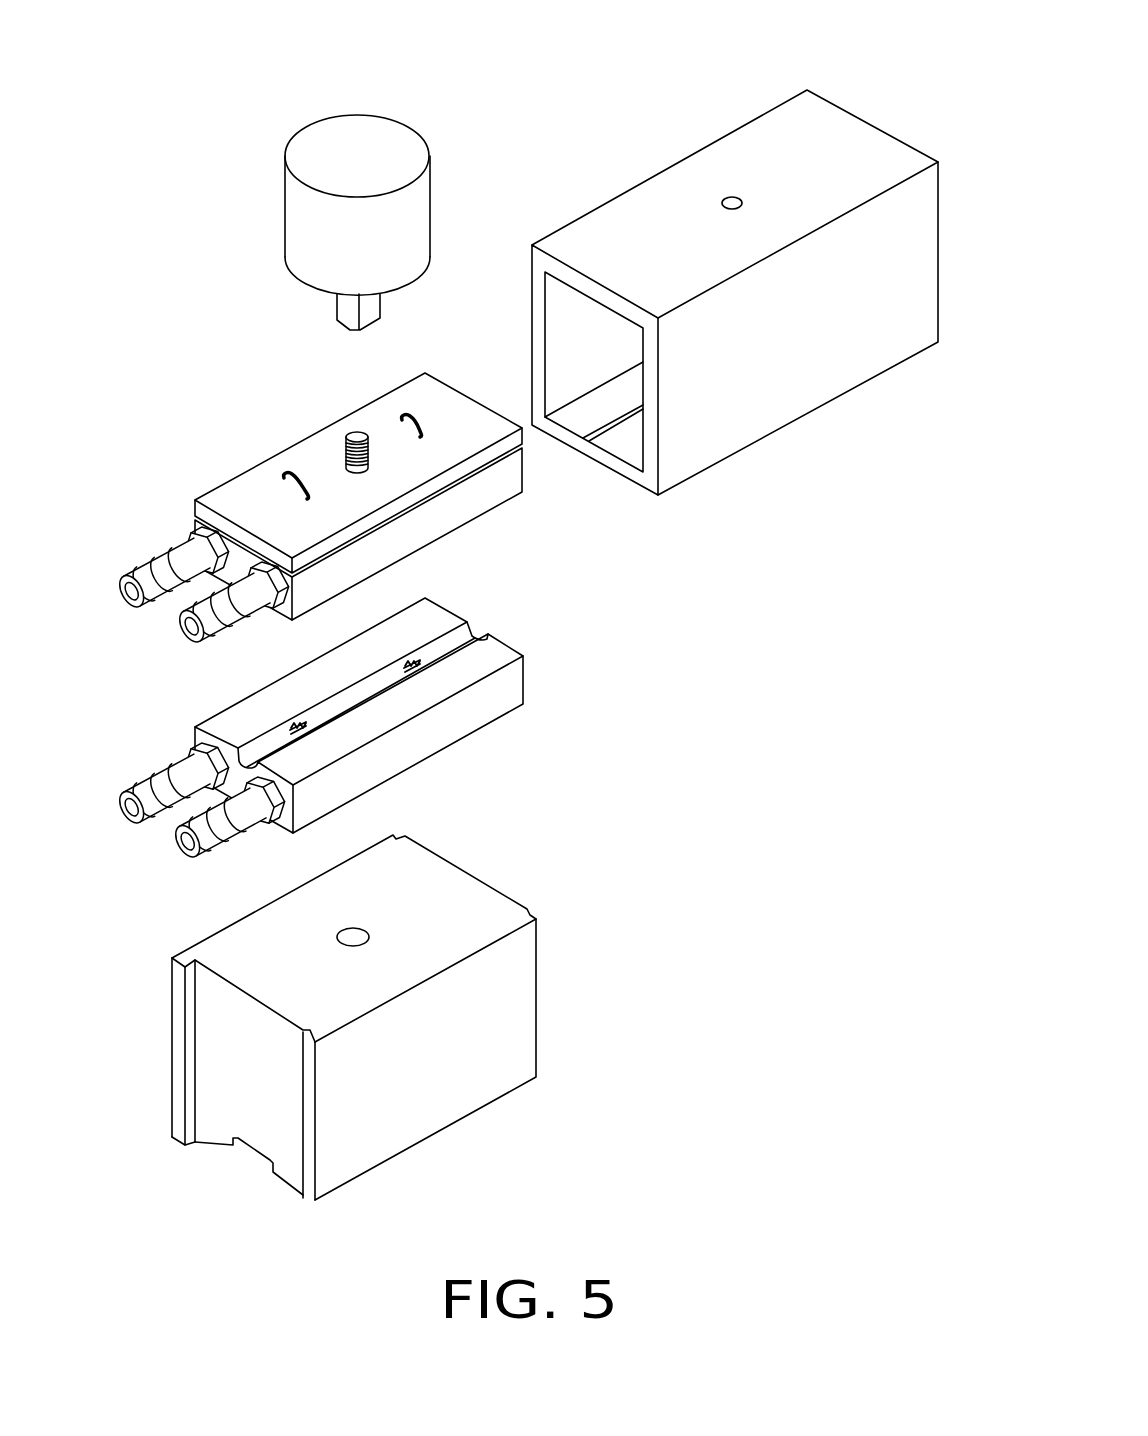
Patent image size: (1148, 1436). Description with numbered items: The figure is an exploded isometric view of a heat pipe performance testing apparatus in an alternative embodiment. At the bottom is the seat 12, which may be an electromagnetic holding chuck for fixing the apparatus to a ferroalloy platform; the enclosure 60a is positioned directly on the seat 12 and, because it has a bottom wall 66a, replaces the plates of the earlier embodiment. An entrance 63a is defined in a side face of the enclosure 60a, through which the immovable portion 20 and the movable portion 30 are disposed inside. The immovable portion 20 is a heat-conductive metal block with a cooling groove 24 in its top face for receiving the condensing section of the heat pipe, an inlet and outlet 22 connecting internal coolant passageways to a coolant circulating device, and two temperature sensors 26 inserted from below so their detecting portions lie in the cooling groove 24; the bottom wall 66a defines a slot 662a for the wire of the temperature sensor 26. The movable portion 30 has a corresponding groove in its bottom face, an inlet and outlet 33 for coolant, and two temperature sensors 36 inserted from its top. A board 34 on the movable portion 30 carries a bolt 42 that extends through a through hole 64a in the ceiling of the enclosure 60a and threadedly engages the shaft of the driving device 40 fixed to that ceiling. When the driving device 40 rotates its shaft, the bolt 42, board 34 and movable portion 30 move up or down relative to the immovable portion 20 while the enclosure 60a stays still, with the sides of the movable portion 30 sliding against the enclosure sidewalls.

The seat 12 is at (497, 1028).
The immovable portion 20 is at (371, 715).
The inlet and outlet 22 is at (207, 835).
The cooling groove 24 is at (255, 747).
The temperature sensors 26 is at (289, 721).
The movable portion 30 is at (433, 537).
The inlet and outlet 33 is at (155, 565).
The board 34 is at (195, 508).
The temperature sensors 36 is at (283, 473).
The driving device 40 is at (303, 212).
The bolt 42 is at (350, 432).
The enclosure 60a is at (681, 285).
The entrance 63a is at (577, 312).
The through hole 64a is at (727, 198).
The bottom wall 66a is at (588, 412).
The slot 662a is at (602, 440).